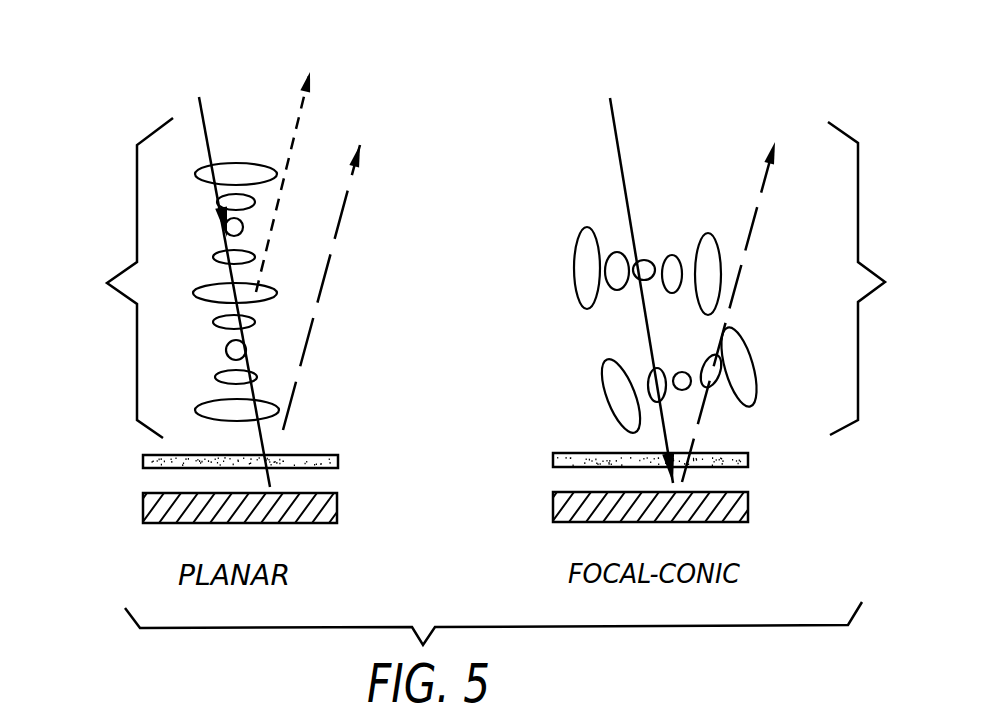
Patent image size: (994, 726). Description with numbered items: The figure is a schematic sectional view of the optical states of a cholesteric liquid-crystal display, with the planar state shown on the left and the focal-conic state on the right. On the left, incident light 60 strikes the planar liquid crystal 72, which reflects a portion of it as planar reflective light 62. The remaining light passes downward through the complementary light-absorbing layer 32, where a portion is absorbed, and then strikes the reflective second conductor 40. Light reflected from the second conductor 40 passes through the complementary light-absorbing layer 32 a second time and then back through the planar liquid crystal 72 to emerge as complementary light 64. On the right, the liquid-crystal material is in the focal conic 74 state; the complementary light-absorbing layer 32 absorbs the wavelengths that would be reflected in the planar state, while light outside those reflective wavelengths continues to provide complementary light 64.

The complementary light-absorbing layer 32 is at (143, 460).
The reflective second conductor 40 is at (143, 508).
The incident light 60 is at (424, 274).
The planar reflective light 62 is at (292, 165).
The complementary light 64 is at (537, 298).
The planar liquid crystal 72 is at (174, 278).
The focal conic 74 is at (750, 279).